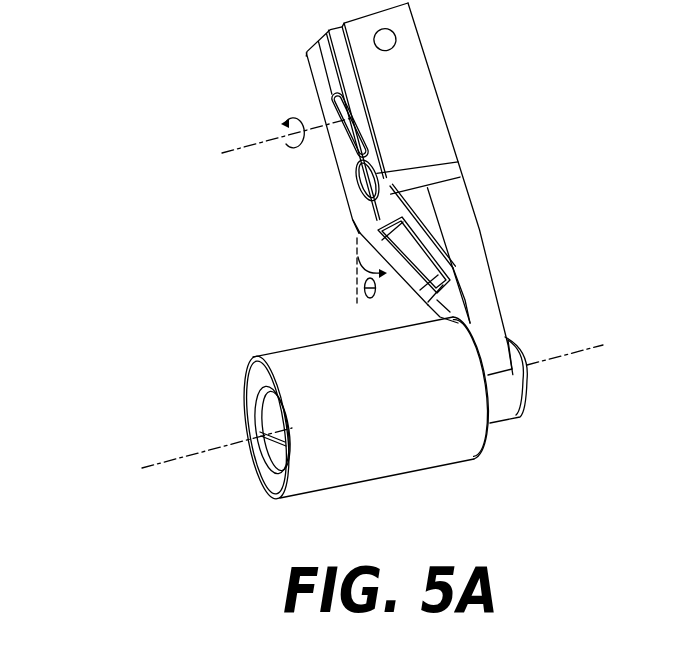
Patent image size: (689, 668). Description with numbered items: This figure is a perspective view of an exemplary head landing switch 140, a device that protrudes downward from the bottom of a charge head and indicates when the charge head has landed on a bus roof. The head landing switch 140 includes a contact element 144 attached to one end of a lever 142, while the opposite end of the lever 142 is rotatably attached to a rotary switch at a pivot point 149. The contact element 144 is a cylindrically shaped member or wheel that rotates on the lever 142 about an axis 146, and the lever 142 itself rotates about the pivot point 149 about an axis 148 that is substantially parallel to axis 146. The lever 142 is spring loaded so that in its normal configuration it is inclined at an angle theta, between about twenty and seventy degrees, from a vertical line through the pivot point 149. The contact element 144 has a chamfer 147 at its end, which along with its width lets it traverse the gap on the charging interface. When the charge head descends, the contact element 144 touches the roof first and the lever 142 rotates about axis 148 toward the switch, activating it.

The head landing switch 140 is at (133, 134).
The lever 142 is at (472, 257).
The contact element 144 is at (410, 448).
The axis 146 is at (152, 465).
The chamfer 147 is at (280, 497).
The axis 148 is at (250, 146).
The pivot point 149 is at (345, 103).